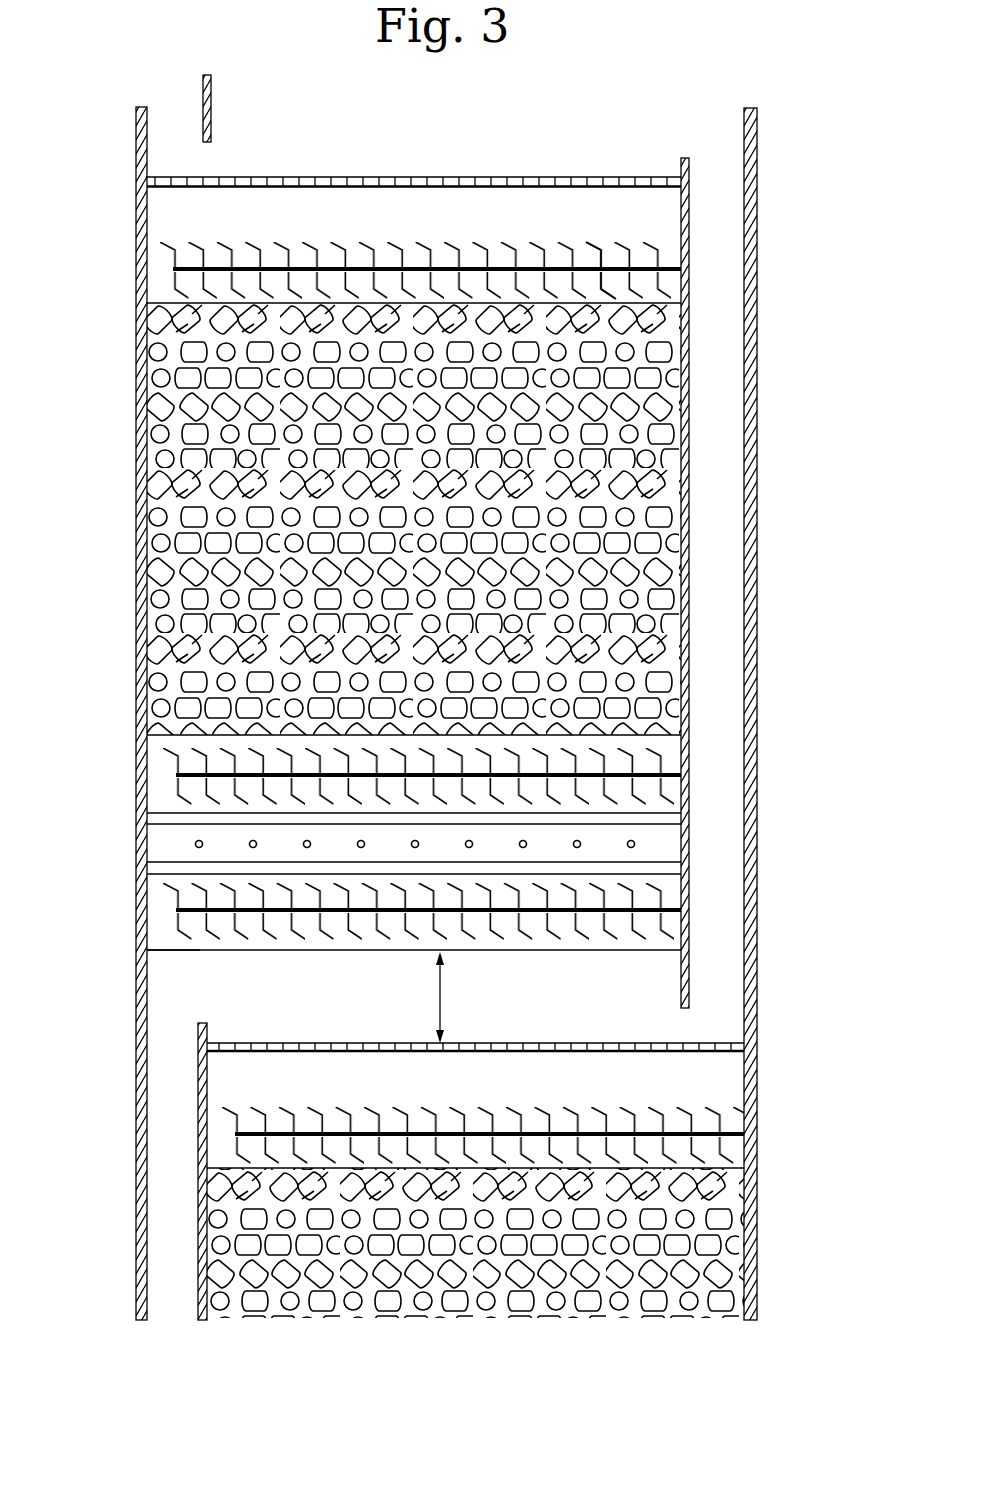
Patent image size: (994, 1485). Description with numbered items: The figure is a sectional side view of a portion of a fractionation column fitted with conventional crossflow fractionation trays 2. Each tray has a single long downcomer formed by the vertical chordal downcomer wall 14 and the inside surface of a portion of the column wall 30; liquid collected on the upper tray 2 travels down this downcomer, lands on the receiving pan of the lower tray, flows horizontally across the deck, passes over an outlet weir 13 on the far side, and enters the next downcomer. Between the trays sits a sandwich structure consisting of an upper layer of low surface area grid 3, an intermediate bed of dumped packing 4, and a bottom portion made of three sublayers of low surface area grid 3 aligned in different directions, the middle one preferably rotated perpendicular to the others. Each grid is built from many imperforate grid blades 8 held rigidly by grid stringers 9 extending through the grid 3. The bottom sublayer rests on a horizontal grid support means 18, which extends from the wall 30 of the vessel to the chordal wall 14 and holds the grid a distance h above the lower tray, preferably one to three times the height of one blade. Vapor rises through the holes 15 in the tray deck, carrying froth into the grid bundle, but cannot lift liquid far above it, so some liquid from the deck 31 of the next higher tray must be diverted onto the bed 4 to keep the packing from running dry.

The crossflow fractionation tray 2 is at (352, 173).
The low surface area grid 3 is at (165, 266).
The dumped packing 4 is at (190, 513).
The grid blade 8 is at (341, 859).
The grid stringer 9 is at (611, 269).
The outlet weir 13 is at (685, 160).
The chordal downcomer wall 14 is at (212, 104).
The hole 15 is at (392, 1043).
The grid support means 18 is at (190, 951).
The column wall 30 is at (758, 509).
The deck 31 is at (427, 187).
The distance h is at (437, 997).